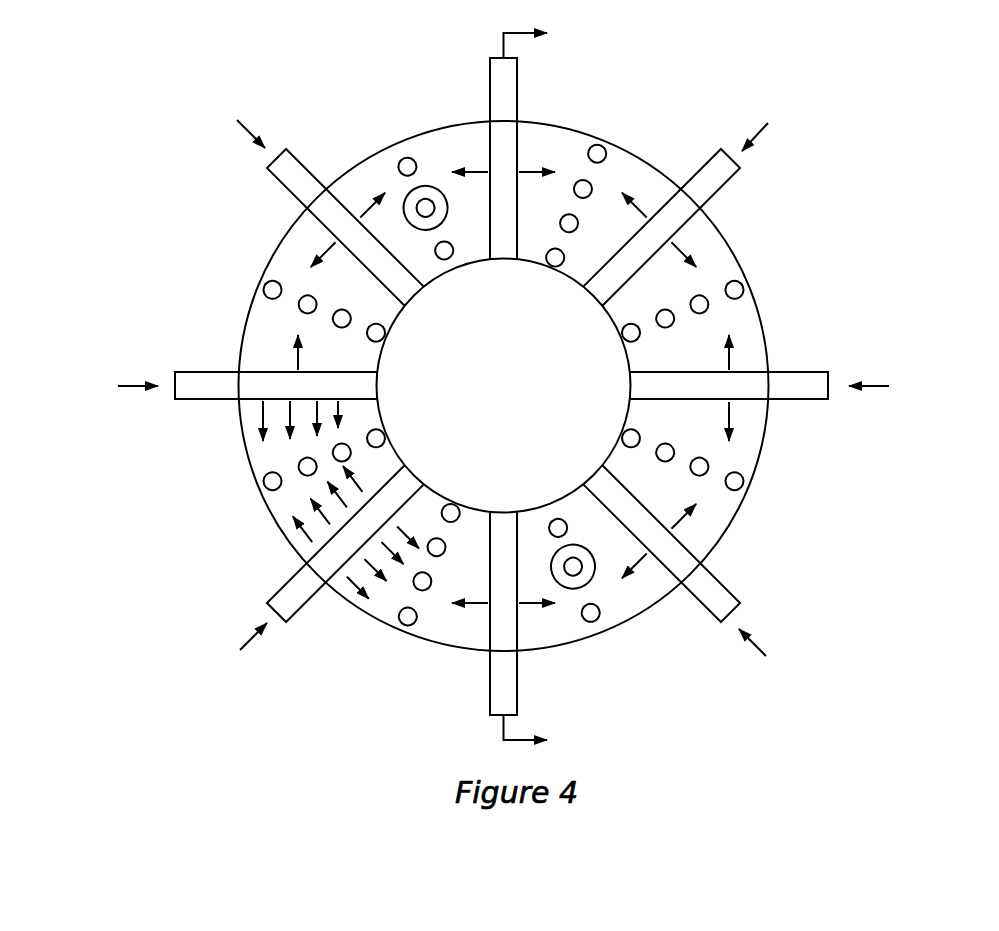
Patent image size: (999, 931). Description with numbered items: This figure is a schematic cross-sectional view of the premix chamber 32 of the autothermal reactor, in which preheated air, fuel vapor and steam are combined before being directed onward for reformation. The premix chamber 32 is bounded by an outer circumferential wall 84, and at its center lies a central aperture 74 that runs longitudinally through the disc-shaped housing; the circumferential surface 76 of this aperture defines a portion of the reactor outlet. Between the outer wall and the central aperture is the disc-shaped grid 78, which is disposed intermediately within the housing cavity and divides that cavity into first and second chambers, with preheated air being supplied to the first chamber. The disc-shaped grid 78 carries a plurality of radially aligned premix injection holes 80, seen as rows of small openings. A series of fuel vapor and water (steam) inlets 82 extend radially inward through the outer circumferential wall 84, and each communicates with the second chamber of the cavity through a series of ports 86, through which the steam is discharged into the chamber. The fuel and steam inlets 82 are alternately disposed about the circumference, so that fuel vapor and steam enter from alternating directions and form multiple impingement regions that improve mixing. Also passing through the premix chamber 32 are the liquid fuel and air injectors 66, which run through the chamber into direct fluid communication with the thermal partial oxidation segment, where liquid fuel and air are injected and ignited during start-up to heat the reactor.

The premix chamber 32 is at (781, 333).
The liquid fuel and air injectors 66 is at (433, 187).
The central aperture 74 is at (486, 474).
The circumferential surface 76 is at (392, 448).
The disc-shaped grid 78 is at (744, 517).
The premix injection holes 80 is at (745, 294).
The fuel vapor and water (steam) inlets 82 is at (728, 184).
The outer circumferential wall 84 is at (617, 147).
The ports 86 is at (298, 372).